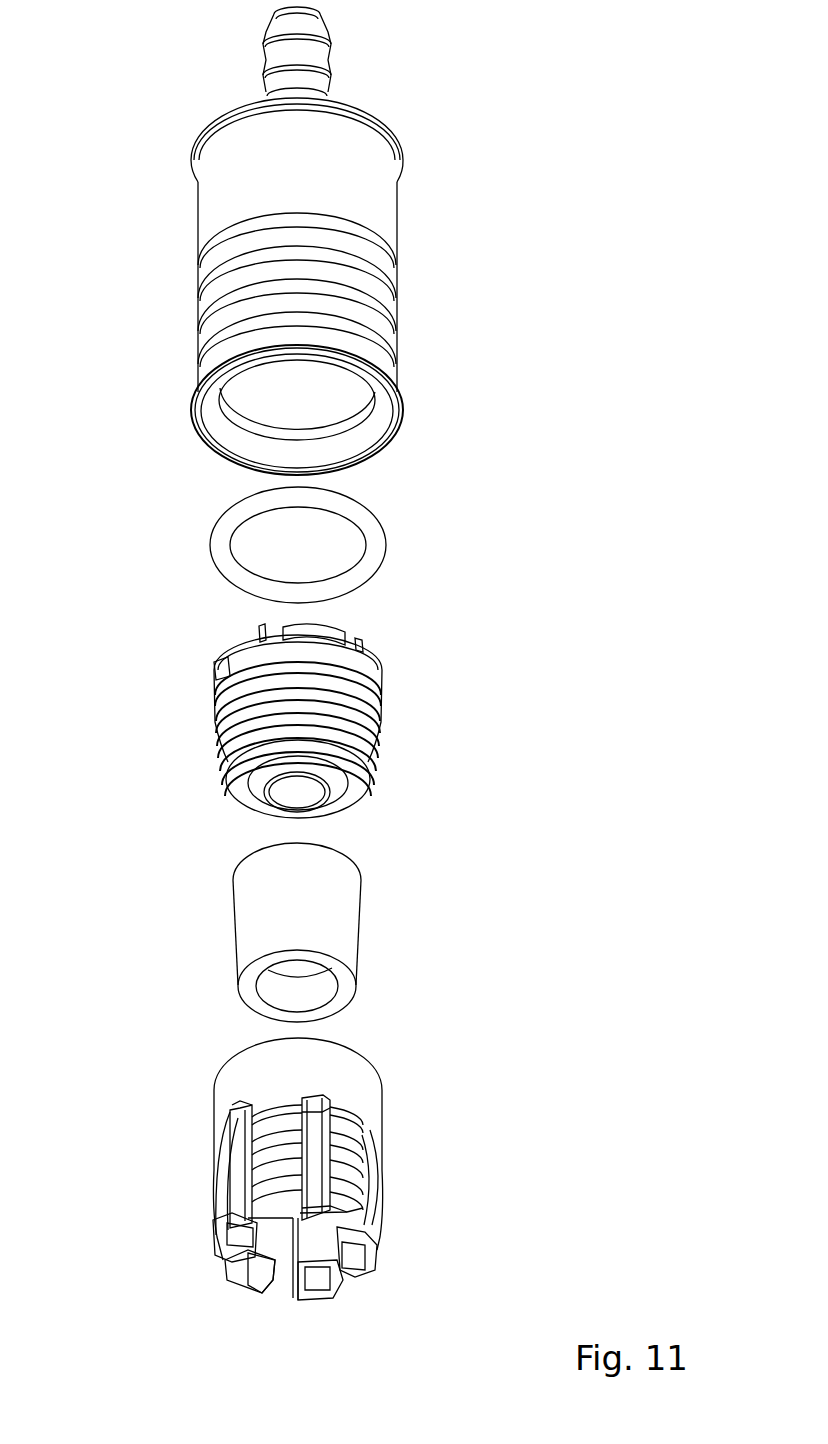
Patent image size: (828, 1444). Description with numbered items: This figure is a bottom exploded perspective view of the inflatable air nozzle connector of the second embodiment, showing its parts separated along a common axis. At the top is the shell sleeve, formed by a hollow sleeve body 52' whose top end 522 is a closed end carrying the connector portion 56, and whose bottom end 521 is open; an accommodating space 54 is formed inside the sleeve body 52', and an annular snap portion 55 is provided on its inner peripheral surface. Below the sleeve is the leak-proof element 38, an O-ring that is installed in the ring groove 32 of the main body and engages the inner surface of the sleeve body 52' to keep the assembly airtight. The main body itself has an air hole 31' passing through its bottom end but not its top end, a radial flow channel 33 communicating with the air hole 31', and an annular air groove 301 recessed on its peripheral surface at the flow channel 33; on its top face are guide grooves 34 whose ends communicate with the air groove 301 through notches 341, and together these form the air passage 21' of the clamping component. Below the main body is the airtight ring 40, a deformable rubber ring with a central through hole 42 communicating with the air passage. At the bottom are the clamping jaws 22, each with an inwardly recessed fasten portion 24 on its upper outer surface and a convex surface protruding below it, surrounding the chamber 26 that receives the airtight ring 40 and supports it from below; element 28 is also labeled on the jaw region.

The connector portion 56 is at (310, 55).
The top end of the sleeve body 522 is at (192, 168).
The sleeve body 52' is at (359, 257).
The bottom end of the sleeve body 521 is at (192, 410).
The accommodating space 54 is at (308, 378).
The annular snap portion 55 is at (317, 432).
The leak-proof element 38 is at (213, 546).
The air passage 21' is at (231, 718).
The air groove 301 is at (313, 643).
The guide grooves 34 is at (273, 627).
The notch 341 is at (262, 632).
The flow channel 33 is at (222, 668).
The ring groove 32 is at (337, 675).
The air hole 31' is at (347, 791).
The airtight ring 40 is at (227, 915).
The through hole 42 is at (452, 1023).
The clamping jaws 22 is at (220, 1233).
The fasten portion 24 is at (353, 1140).
The finger 28 is at (353, 1195).
The chamber 26 is at (317, 1240).